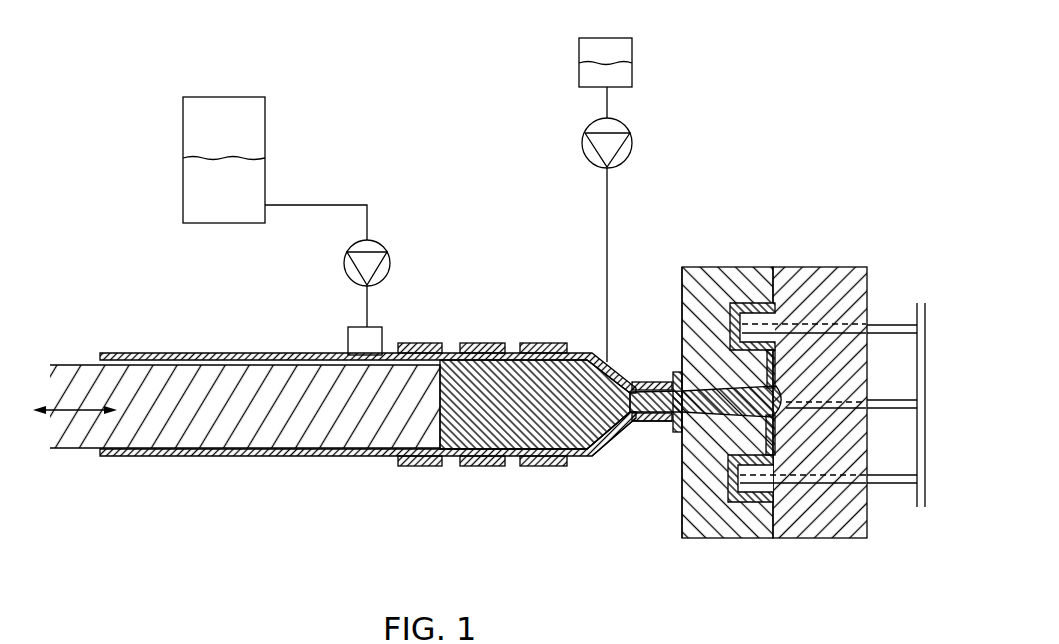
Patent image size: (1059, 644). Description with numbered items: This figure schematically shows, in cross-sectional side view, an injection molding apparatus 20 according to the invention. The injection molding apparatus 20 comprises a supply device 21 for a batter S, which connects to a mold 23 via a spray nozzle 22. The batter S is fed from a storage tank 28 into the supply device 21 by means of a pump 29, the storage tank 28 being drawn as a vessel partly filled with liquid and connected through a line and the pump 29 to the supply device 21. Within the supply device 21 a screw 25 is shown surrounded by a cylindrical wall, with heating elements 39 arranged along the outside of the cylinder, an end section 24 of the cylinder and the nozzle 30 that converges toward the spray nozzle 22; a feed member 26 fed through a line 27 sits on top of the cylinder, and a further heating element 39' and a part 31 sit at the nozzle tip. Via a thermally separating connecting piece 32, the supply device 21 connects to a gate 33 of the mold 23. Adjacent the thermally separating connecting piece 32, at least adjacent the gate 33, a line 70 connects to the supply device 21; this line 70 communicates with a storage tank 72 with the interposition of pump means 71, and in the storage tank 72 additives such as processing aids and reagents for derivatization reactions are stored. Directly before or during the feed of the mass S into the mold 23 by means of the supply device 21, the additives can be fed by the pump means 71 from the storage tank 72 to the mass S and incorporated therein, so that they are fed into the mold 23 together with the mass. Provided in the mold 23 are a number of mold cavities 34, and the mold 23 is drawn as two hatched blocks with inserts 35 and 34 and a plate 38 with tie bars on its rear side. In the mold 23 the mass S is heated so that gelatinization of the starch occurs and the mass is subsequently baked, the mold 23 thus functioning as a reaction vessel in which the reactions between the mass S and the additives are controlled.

The injection molding apparatus 20 is at (247, 516).
The supply device 21 is at (190, 472).
The spray nozzle 22 is at (641, 364).
The mold 23 is at (734, 252).
The cylinder end section 24 is at (510, 457).
The screw 25 is at (215, 388).
The feed device 26 is at (360, 342).
The feed line 27 is at (365, 305).
The storage tank 28 is at (242, 205).
The pump 29 is at (348, 262).
The nozzle 30 is at (607, 440).
The nozzle body 31 is at (649, 462).
The thermally separating connecting piece 32 is at (677, 433).
The gate 33 is at (682, 343).
The mold cavities 34 is at (752, 503).
The upper insert 35 is at (783, 315).
The ejector plate 38 is at (917, 448).
The heating elements 39 is at (482, 410).
The nozzle heating element 39' is at (624, 503).
The line 70 is at (607, 186).
The pump means 71 is at (610, 140).
The storage tank 72 is at (613, 51).
The batter S is at (550, 372).